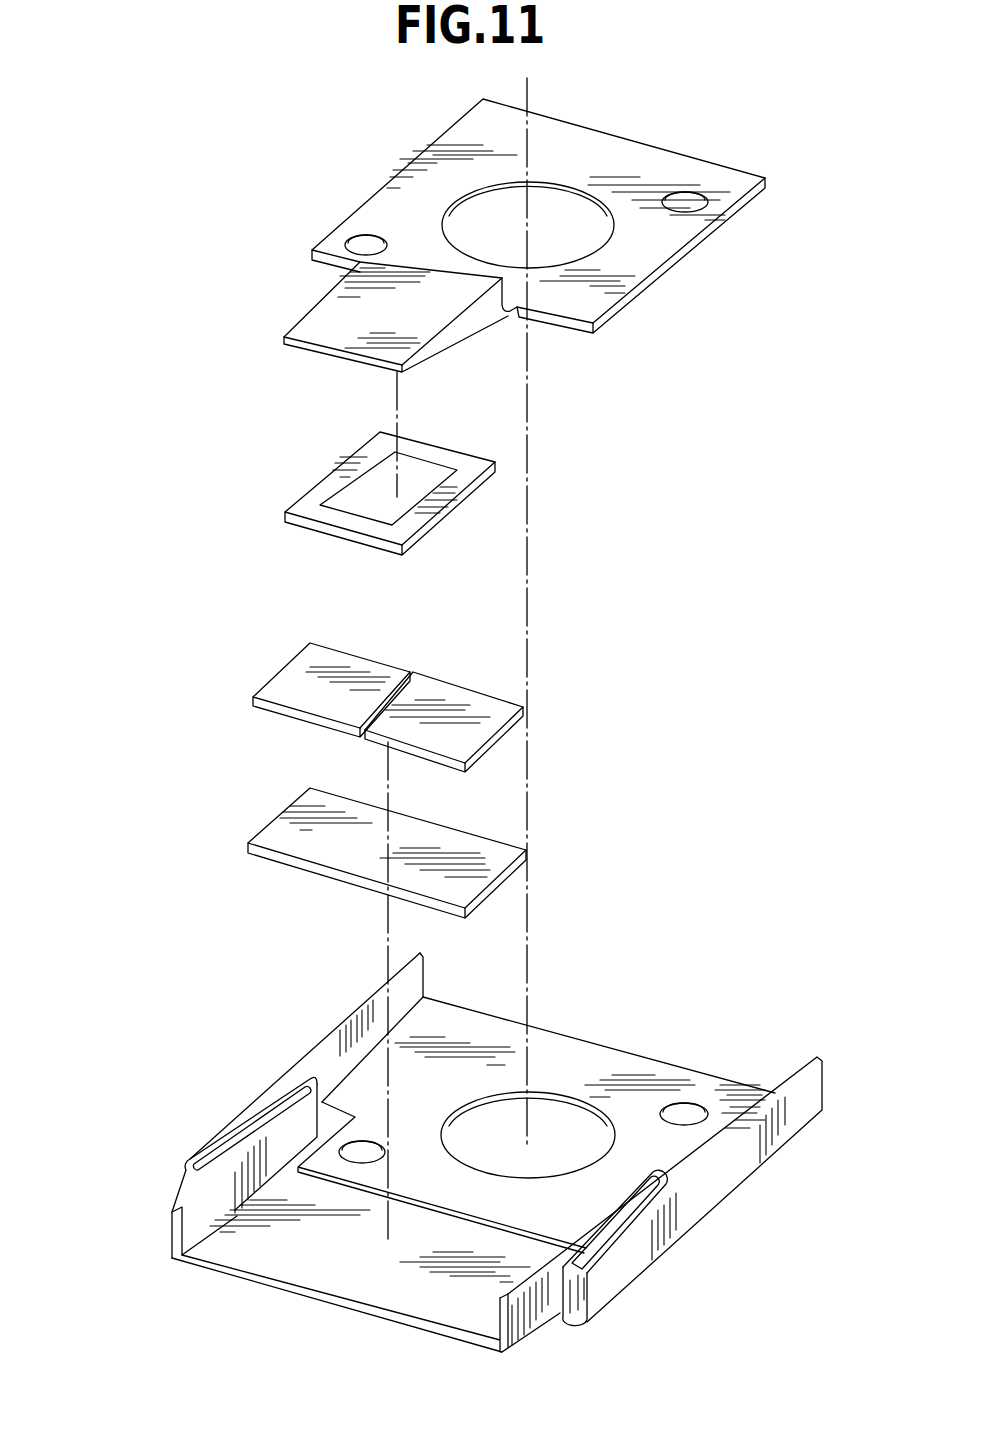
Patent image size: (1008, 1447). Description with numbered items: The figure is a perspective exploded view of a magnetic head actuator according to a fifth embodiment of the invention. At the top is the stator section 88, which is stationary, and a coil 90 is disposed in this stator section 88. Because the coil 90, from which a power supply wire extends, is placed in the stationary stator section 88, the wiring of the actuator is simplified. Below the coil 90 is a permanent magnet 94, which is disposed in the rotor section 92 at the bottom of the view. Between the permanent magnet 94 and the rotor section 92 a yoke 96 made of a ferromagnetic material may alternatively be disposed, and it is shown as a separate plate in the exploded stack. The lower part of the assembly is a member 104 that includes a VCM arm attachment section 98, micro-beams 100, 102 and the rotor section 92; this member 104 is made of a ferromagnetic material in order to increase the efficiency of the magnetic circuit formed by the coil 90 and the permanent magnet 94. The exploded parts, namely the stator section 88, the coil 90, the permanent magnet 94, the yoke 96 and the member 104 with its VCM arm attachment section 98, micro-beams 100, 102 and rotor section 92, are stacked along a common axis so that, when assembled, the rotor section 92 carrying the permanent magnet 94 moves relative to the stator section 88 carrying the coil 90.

The stator section 88 is at (342, 308).
The coil 90 is at (315, 480).
The rotor section 92 is at (312, 1260).
The permanent magnet 94 is at (300, 675).
The yoke 96 is at (287, 838).
The VCM arm attachment section 98 is at (563, 1072).
The micro-beam 100 is at (600, 1285).
The micro-beam 102 is at (192, 1180).
The member 104 is at (456, 1156).